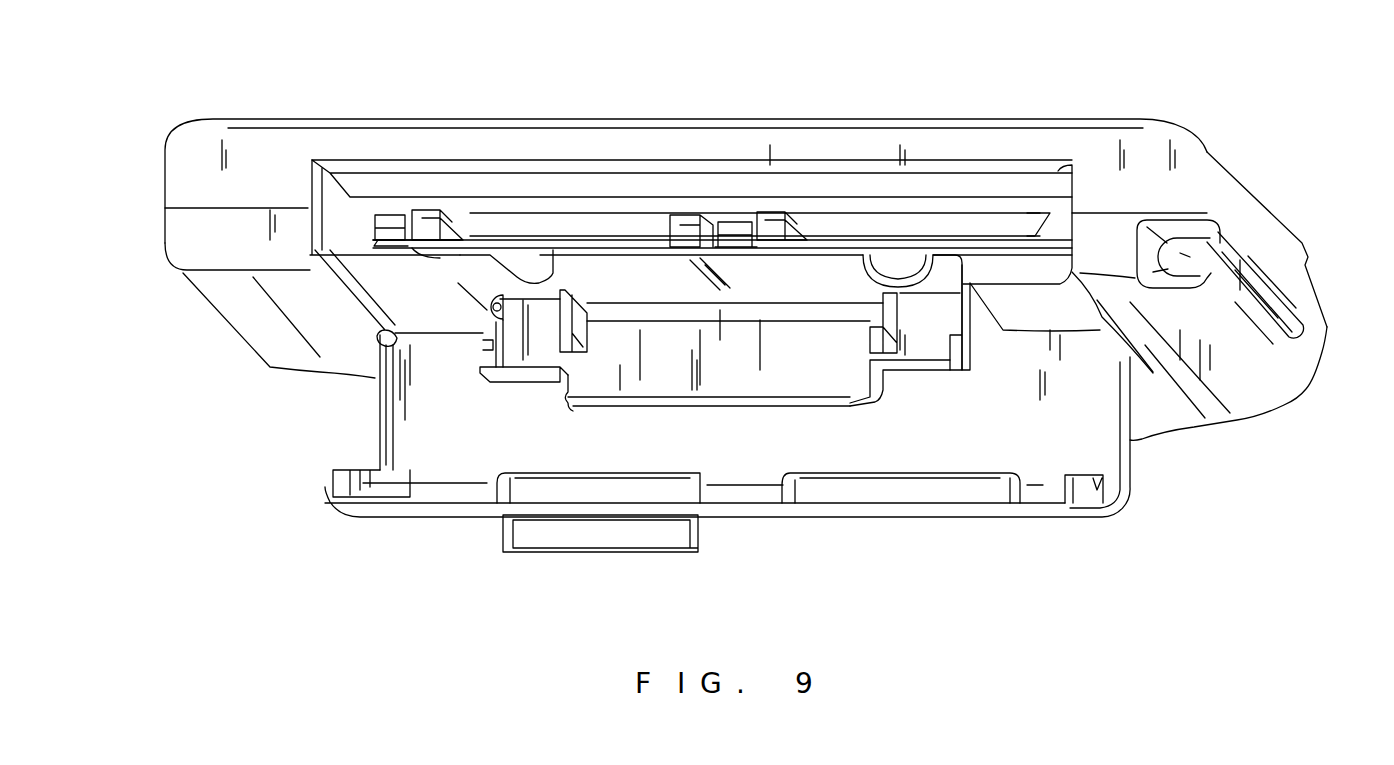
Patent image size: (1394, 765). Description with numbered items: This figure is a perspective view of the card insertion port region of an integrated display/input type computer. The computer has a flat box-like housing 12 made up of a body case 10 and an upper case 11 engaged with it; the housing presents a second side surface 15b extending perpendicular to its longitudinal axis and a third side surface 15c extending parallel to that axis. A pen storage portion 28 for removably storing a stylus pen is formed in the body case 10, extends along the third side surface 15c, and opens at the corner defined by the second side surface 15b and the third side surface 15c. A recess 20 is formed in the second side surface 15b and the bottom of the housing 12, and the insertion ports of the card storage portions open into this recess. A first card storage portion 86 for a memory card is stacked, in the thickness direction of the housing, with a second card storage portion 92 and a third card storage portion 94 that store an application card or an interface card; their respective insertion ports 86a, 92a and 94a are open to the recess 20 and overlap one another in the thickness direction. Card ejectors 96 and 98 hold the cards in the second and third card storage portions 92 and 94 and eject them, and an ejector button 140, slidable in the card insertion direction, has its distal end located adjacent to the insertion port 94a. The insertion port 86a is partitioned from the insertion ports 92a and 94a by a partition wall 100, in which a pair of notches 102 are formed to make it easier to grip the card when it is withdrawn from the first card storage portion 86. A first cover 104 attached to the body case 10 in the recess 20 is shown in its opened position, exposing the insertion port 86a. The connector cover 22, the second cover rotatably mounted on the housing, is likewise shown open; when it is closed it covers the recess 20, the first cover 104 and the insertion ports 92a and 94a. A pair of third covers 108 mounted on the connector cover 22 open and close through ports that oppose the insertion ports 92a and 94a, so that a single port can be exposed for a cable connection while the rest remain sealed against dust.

The housing 12 is at (118, 66).
The upper case 11 is at (174, 148).
The body case 10 is at (176, 232).
The second side surface 15b is at (264, 140).
The third side surface 15c is at (1305, 285).
The pen storage portion 28 is at (1197, 250).
The recess 20 is at (367, 263).
The connector cover 22 is at (1118, 480).
The second card storage portion 92 is at (532, 221).
The insertion port 92a is at (600, 218).
The third card storage portion 94 is at (878, 224).
The insertion port 94a is at (920, 226).
The card ejector 96 is at (440, 213).
The card ejector 98 is at (773, 213).
The partition wall 100 is at (640, 265).
The notches 102 is at (507, 247).
The first cover 104 is at (570, 375).
The first card storage portion 86 is at (840, 310).
The insertion port 86a is at (742, 313).
The third covers 108 is at (950, 497).
The ejector button 140 is at (387, 226).